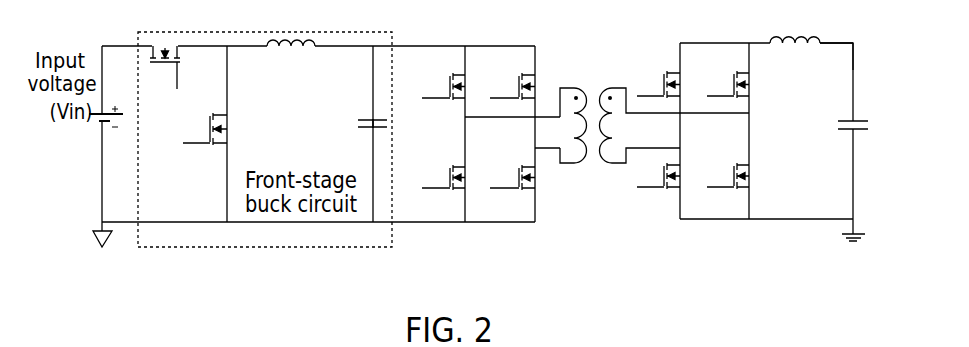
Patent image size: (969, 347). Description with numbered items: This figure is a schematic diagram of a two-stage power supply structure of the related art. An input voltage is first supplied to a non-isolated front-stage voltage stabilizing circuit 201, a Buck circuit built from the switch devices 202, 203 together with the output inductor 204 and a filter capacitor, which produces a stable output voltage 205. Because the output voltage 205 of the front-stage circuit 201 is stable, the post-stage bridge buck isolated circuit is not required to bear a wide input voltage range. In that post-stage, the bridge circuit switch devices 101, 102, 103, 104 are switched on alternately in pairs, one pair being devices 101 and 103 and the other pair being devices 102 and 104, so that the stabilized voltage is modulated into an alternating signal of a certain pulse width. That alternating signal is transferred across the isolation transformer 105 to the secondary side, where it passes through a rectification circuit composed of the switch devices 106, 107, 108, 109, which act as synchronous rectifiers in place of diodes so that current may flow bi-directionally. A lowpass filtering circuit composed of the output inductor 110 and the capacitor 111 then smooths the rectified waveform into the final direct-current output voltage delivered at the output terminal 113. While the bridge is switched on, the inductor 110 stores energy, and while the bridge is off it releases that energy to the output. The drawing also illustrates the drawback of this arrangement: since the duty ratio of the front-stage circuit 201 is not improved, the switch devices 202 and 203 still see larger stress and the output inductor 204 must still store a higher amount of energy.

The bridge circuit switch device 101 is at (440, 85).
The bridge circuit switch device 102 is at (440, 173).
The bridge circuit switch device 103 is at (508, 173).
The bridge circuit switch device 104 is at (508, 85).
The transformer 105 is at (620, 142).
The secondary-side switch device 106 is at (652, 84).
The rectification circuit switch device 107 is at (652, 190).
The rectification circuit switch device 108 is at (723, 190).
The rectification circuit switch device 109 is at (720, 84).
The output inductor 110 is at (795, 59).
The capacitor 111 is at (832, 137).
The output terminal 113 is at (844, 43).
The front-stage voltage stabilizing circuit 201 is at (265, 155).
The switch device 202 is at (165, 79).
The switch device 203 is at (201, 144).
The output inductor 204 is at (291, 61).
The output voltage 205 is at (397, 77).